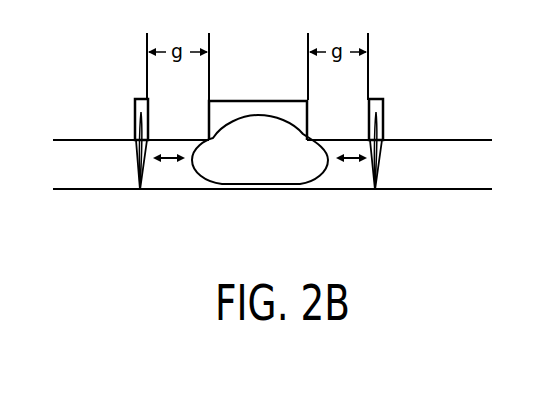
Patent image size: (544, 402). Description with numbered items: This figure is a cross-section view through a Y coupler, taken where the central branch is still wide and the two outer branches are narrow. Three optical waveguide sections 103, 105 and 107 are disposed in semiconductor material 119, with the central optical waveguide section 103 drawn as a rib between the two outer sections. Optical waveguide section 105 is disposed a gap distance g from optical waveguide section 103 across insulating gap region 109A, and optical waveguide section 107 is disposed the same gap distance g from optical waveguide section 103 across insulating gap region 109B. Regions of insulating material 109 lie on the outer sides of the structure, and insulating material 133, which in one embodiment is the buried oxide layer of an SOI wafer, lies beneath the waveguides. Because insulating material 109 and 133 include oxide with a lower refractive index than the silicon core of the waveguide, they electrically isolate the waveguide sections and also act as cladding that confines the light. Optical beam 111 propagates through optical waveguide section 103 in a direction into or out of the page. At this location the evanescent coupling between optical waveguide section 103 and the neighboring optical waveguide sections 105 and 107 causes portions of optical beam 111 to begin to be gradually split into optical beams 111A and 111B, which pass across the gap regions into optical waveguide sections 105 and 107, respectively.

The optical waveguide section 103 is at (252, 100).
The optical waveguide section 105 is at (135, 97).
The optical waveguide section 107 is at (378, 98).
The insulating material 109 is at (88, 131).
The insulating gap region 109A is at (198, 131).
The insulating gap region 109B is at (365, 131).
The optical beam 111 is at (308, 183).
The optical beam 111A is at (140, 190).
The optical beam 111B is at (375, 190).
The semiconductor material 119 is at (135, 107).
The insulating material 133 is at (270, 220).